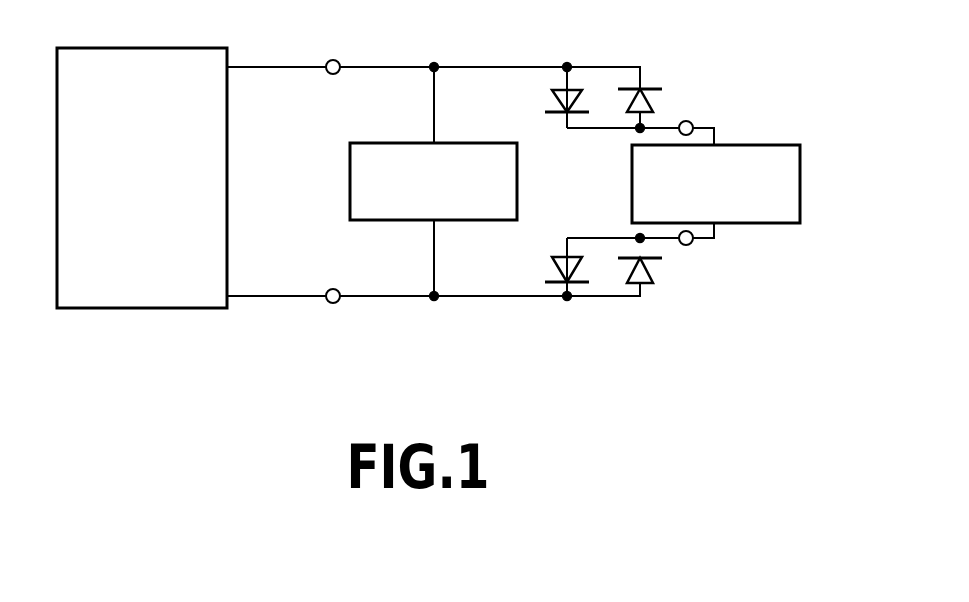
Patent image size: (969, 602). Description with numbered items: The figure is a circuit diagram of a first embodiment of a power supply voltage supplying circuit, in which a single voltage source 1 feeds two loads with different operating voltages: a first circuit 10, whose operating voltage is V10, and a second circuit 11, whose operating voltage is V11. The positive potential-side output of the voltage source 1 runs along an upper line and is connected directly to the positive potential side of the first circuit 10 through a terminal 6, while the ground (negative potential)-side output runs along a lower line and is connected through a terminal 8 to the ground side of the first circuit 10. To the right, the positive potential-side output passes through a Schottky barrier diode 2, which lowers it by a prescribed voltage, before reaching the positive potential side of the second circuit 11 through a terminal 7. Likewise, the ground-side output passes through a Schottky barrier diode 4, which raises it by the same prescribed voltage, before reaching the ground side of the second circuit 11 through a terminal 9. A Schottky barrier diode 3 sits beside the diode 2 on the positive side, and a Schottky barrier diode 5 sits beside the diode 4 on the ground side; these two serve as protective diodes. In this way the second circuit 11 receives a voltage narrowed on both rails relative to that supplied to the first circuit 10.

The voltage source 1 is at (78, 50).
The Schottky barrier diode 2 is at (552, 92).
The Schottky barrier diode 3 is at (657, 107).
The Schottky barrier diode 4 is at (558, 270).
The Schottky barrier diode 5 is at (653, 283).
The terminal 6 is at (346, 62).
The terminal 7 is at (693, 122).
The terminal 8 is at (340, 302).
The terminal 9 is at (692, 246).
The first circuit 10 is at (350, 155).
The second circuit 11 is at (792, 147).